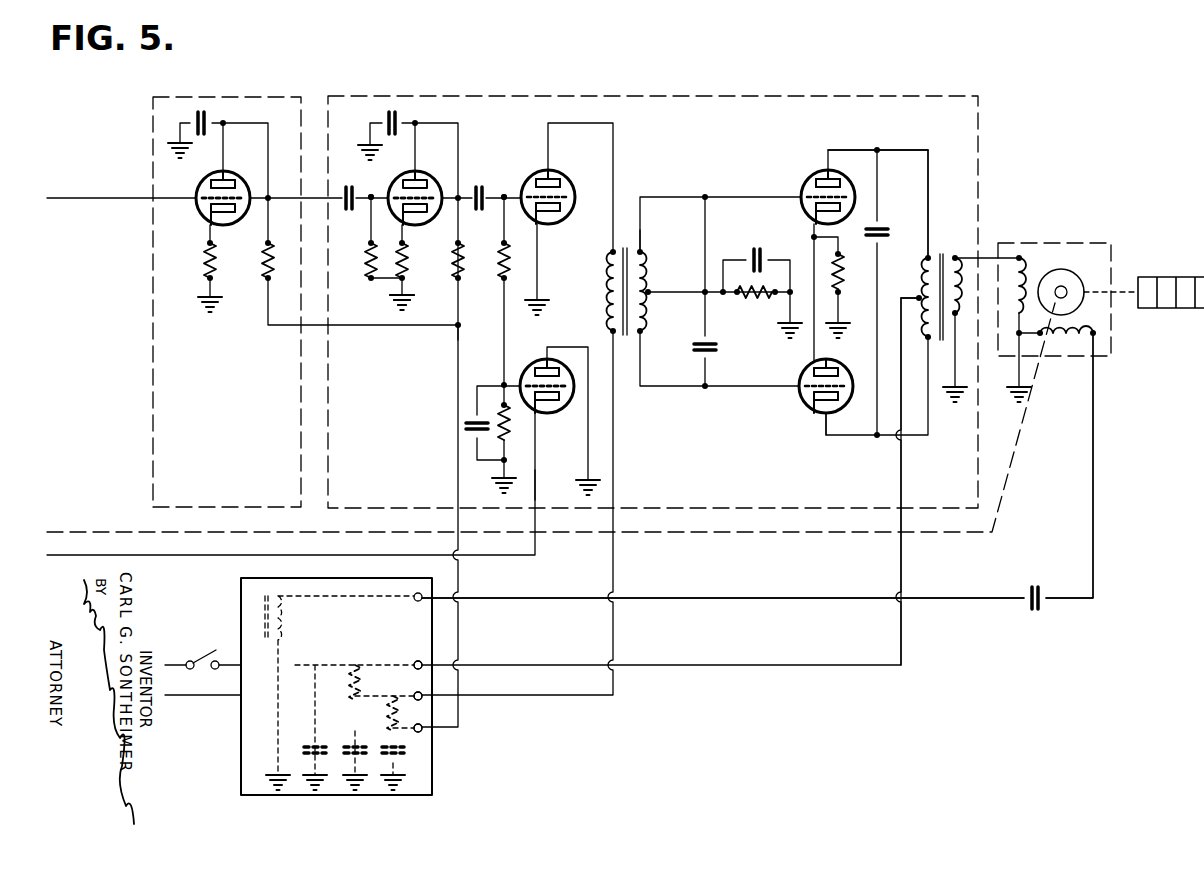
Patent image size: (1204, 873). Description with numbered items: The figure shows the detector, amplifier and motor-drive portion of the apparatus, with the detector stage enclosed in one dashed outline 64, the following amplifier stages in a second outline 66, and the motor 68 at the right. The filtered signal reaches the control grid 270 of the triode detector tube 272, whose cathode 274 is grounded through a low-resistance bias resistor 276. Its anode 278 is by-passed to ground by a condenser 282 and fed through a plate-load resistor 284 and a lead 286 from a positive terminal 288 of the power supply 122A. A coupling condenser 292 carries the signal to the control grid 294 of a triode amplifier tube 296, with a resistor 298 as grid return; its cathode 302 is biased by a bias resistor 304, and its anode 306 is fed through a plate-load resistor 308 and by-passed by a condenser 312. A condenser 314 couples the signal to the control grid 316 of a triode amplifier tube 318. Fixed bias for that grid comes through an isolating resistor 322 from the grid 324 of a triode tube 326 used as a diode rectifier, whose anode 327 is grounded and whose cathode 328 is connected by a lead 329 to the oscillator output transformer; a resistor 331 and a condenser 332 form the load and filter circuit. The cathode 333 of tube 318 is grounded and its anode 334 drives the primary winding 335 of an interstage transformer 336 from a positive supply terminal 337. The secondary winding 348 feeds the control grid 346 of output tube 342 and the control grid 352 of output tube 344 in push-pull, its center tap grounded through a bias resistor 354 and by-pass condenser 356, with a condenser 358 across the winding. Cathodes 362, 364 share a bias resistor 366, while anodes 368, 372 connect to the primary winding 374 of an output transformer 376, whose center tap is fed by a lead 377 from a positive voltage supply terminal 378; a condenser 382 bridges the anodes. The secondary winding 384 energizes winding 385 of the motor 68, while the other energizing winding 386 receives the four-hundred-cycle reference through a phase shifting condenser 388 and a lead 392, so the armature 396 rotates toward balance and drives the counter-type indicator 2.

The counter-type indicator 2 is at (1162, 322).
The input amplifier stage 64 is at (150, 124).
The frequency doubler and amplifier unit 66 is at (714, 90).
The two-phase reversible motor 68 is at (1113, 248).
The power supply 122A is at (229, 735).
The control grid 270 is at (202, 213).
The triode detector tube 272 is at (238, 176).
The cathode 274 is at (216, 224).
The bias resistor 276 is at (204, 266).
The anode 278 is at (204, 195).
The condenser 282 is at (206, 110).
The plate-load resistor 284 is at (264, 266).
The lead 286 is at (459, 347).
The positive terminal 288 is at (423, 734).
The coupling condenser 292 is at (352, 208).
The control grid 294 is at (403, 210).
The triode amplifier tube 296 is at (424, 178).
The resistor 298 is at (366, 264).
The cathode 302 is at (408, 224).
The bias resistor 304 is at (406, 264).
The anode 306 is at (376, 183).
The plate-load resistor 308 is at (475, 273).
The condenser 312 is at (386, 110).
The condenser 314 is at (494, 210).
The control grid 316 is at (521, 196).
The triode amplifier tube 318 is at (563, 178).
The isolating resistor 322 is at (512, 259).
The grid 324 is at (526, 376).
The triode tube 326 is at (568, 370).
The anode 327 is at (546, 362).
The cathode 328 is at (542, 411).
The lead 329 is at (536, 488).
The resistor 331 is at (504, 400).
The condenser 332 is at (468, 417).
The cathode 333 is at (562, 224).
The anode 334 is at (538, 178).
The primary winding 335 is at (608, 292).
The interstage transformer 336 is at (640, 247).
The positive supply terminal 337 is at (415, 692).
The output amplifier tube 342 is at (846, 161).
The output amplifier tube 344 is at (846, 398).
The control grid 346 is at (800, 196).
The secondary winding 348 is at (648, 280).
The control grid 352 is at (798, 384).
The bias resistor 354 is at (762, 298).
The by-pass condenser 356 is at (748, 256).
The condenser 358 is at (700, 346).
The cathode 362 is at (814, 234).
The cathode 364 is at (830, 370).
The bias resistor 366 is at (844, 286).
The anode 368 is at (816, 174).
The anode 372 is at (809, 404).
The primary winding 374 is at (922, 284).
The output transformer 376 is at (928, 258).
The lead 377 is at (902, 478).
The positive voltage supply terminal 378 is at (415, 660).
The condenser 382 is at (880, 225).
The secondary winding 384 is at (956, 258).
The energizing winding 385 is at (1022, 256).
The energizing winding 386 is at (1065, 346).
The phase shifting condenser 388 is at (1022, 592).
The lead 392 is at (1094, 492).
The armature 396 is at (1092, 270).